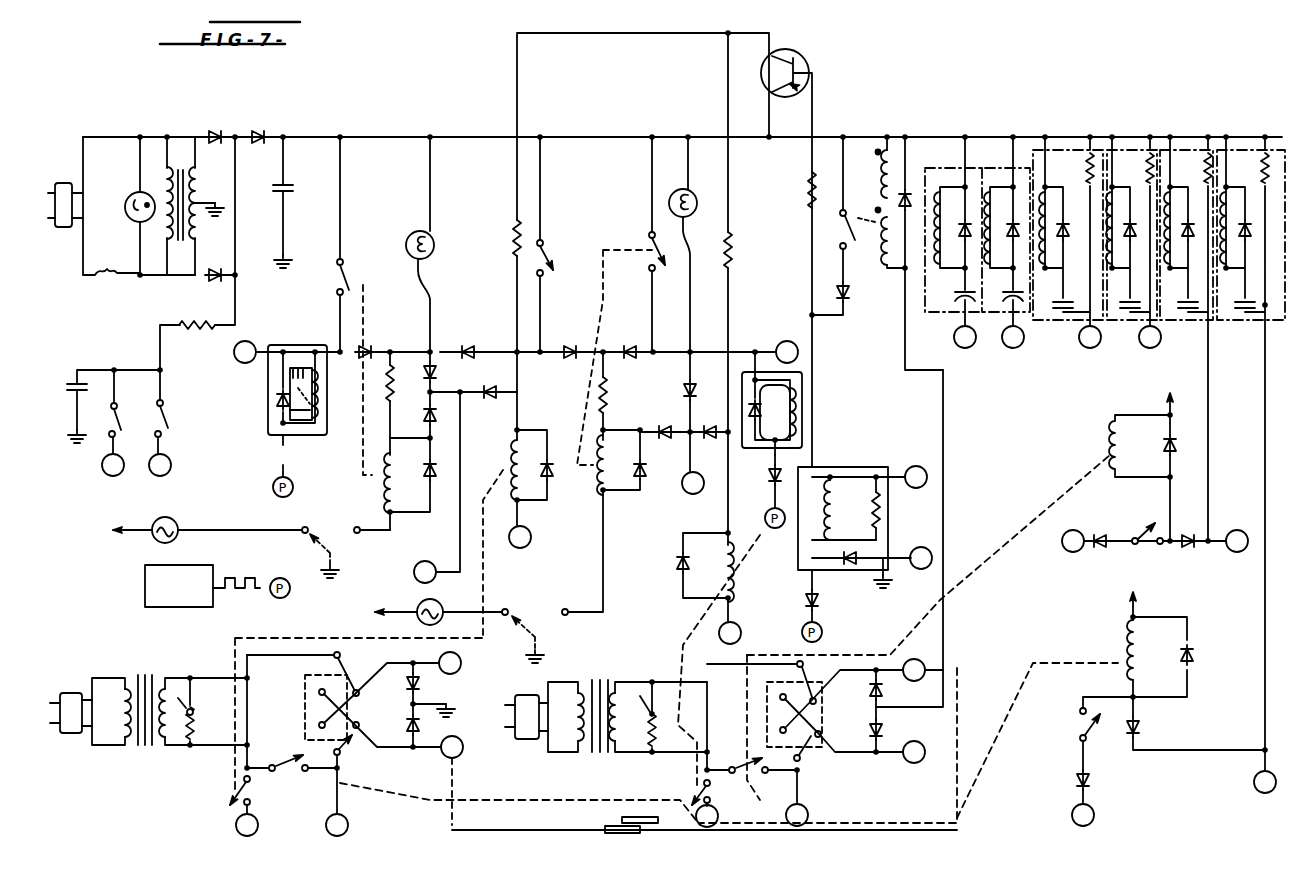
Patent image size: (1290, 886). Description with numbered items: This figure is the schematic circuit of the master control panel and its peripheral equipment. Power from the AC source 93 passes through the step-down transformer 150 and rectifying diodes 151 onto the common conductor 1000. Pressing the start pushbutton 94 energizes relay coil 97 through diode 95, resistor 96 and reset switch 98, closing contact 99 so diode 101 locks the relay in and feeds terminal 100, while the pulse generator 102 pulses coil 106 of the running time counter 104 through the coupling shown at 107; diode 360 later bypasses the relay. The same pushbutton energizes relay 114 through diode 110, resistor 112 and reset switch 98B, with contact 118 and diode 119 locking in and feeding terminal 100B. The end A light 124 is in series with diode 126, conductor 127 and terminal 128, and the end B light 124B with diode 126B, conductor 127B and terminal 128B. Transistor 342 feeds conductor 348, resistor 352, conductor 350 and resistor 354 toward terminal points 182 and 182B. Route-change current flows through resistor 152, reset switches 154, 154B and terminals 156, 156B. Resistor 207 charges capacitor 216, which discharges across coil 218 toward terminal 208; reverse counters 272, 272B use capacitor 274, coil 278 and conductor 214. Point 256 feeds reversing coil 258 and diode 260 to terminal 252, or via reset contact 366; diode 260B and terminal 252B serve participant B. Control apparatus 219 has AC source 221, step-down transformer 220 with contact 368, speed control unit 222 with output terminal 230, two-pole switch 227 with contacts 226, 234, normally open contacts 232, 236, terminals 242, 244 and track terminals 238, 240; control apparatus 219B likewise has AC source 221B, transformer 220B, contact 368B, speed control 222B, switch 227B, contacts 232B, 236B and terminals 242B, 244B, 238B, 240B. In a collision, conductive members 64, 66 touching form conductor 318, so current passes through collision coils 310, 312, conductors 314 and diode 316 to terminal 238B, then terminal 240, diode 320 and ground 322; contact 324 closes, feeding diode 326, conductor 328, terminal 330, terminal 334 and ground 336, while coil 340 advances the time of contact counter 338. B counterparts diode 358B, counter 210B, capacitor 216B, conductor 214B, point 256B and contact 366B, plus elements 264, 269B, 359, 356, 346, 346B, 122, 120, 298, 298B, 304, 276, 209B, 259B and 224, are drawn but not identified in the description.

The AC source 93 is at (60, 180).
The step-down transformer 150 is at (180, 260).
The rectifying diodes 151 is at (215, 130).
The common conductor 1000 is at (356, 134).
The resistor 152 is at (197, 253).
The normally closed reset switch 154 is at (110, 402).
The normally closed reset switch 154B is at (157, 406).
The terminal 156 is at (103, 472).
The terminal point 156B is at (172, 463).
The terminal 100 is at (233, 352).
The mechanical coupling 107 is at (294, 404).
The diode 101 is at (322, 372).
The coil 106 is at (322, 400).
The running time counter 104 is at (292, 450).
The normally open contact 99 is at (360, 290).
The end A light 124 is at (406, 246).
The coil 264 is at (180, 512).
The normally closed reset switch 98 is at (340, 556).
The negative pulse generator 102 is at (205, 566).
The coil 269B is at (418, 600).
The resistor 96 is at (392, 365).
The diode 95 is at (466, 343).
The diode 126 is at (440, 372).
The diode 359 is at (490, 398).
The diode 360 is at (415, 415).
The relay coil 97 is at (380, 490).
The conductor 356 is at (458, 526).
The terminal 128 is at (428, 560).
The conductor 127 is at (458, 452).
The terminal point 182 is at (533, 540).
The conductor 348 is at (518, 112).
The resistor 352 is at (511, 232).
The start pushbutton 94 is at (574, 244).
The diode 110 is at (576, 338).
The diode 119 is at (640, 336).
The resistor 112 is at (612, 397).
The relay 114 is at (602, 486).
The normally open contact 118 is at (671, 244).
The end B light 124B is at (706, 244).
The conductor 127B is at (693, 322).
The diode 126B is at (686, 390).
The diode 358B is at (710, 440).
The terminal 128B is at (703, 494).
The terminal 100B is at (780, 342).
The conductor 350 is at (727, 88).
The resistor 354 is at (732, 272).
The relay coil 346B is at (740, 578).
The terminal point 182B is at (755, 616).
The relay 122 is at (822, 385).
The diode 120 is at (762, 455).
The transistor 346 is at (770, 40).
The transistor 342 is at (840, 57).
The normally open contact 324 is at (838, 228).
The diode 326 is at (836, 294).
The collision coil 312 is at (882, 168).
The collision coil 310 is at (886, 254).
The conductor 328 is at (905, 366).
The conductors 314 is at (945, 478).
The terminal 330 is at (862, 468).
The coil 340 is at (841, 507).
The time of contact counter 338 is at (880, 505).
The terminal 334 is at (917, 570).
The ground 336 is at (842, 600).
The gate counter terminal 298 is at (963, 348).
The gate counter terminal 298B is at (1011, 252).
The gate counter 304 is at (938, 314).
The terminal 208 is at (1070, 256).
The resistor 207 is at (1071, 165).
The capacitor 216 is at (1062, 300).
The coil 218 is at (1047, 225).
The alternative route counter 210B is at (1128, 248).
The coil 278 is at (1132, 165).
The capacitor 216B is at (1134, 288).
The terminal 209B is at (1147, 372).
The B reverse counter 272B is at (1205, 337).
The resistor 276 is at (1245, 198).
The A reverse counter 272 is at (1244, 442).
The capacitor 274 is at (1247, 225).
The relay coil 259B is at (1110, 450).
The point 256B is at (1176, 400).
The conductor 214 is at (1264, 440).
The conductor 214B is at (1210, 492).
The normally open contact 366B is at (1134, 535).
The diode 260B is at (1165, 566).
The terminal 252B is at (1234, 554).
The reversing coil 258 is at (1136, 665).
The point 256 is at (1130, 603).
The diode 260 is at (1143, 728).
The normally open contact 366 is at (1078, 727).
The terminal 252 is at (1257, 795).
The speed control unit 224 is at (252, 652).
The AC source 221 is at (78, 738).
The control apparatus 219 is at (115, 765).
The step-down transformer 220 is at (153, 765).
The normally open contact 368 is at (193, 711).
The speed control unit 222 is at (212, 757).
The output terminal 230 is at (250, 760).
The contact 226 is at (330, 692).
The two-pole switch 227 is at (368, 675).
The contact 234 is at (361, 755).
The diode 320 is at (413, 760).
The ground 322 is at (454, 710).
The terminal 238 is at (463, 665).
The terminal 240 is at (462, 742).
The normally open contact 232 is at (283, 776).
The normally open contact 236 is at (251, 797).
The terminal 242 is at (235, 832).
The terminal 244 is at (349, 826).
The normally closed reset switch 98B is at (563, 638).
The AC source 221B is at (528, 744).
The control apparatus 219B is at (600, 762).
The step-down transformer 220B is at (607, 670).
The normally open contact 368B is at (650, 695).
The speed control unit 222B is at (685, 678).
The contact 232B is at (740, 767).
The normally open contact 236B is at (716, 786).
The terminal 242B is at (718, 822).
The terminal 244B is at (805, 810).
The two-pole switch 227B is at (815, 672).
The diode 316 is at (884, 690).
The terminal 238B is at (925, 660).
The terminal 240B is at (918, 742).
The conductor 318 is at (955, 806).
The conductive member 64 is at (604, 826).
The conductive member 66 is at (640, 809).